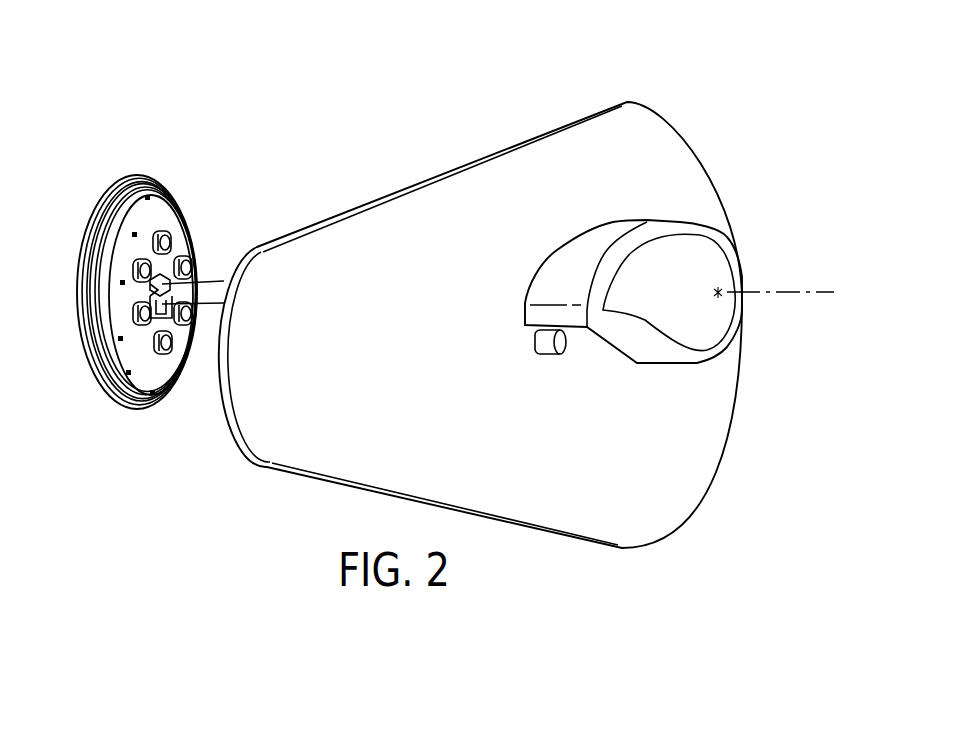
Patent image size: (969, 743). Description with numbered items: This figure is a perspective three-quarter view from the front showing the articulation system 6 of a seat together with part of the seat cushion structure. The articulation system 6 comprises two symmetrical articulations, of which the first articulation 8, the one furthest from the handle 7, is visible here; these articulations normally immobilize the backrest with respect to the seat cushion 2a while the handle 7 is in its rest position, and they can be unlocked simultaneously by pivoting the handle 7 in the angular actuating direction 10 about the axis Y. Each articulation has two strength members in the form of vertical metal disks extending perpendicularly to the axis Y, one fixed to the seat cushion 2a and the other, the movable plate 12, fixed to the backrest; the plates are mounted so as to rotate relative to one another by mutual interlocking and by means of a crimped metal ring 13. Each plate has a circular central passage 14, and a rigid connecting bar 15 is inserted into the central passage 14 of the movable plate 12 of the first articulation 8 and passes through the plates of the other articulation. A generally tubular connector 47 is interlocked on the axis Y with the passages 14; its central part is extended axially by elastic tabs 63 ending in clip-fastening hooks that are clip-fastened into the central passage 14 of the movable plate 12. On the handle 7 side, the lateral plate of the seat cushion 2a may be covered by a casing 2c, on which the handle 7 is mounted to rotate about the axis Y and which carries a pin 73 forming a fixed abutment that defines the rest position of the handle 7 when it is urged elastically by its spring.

The seat cushion 2a is at (660, 559).
The casing 2c is at (693, 467).
The articulation system 6 is at (134, 273).
The handle 7 is at (719, 252).
The first articulation 8 is at (120, 420).
The angular actuating direction 10 is at (513, 228).
The movable plate 12 is at (182, 366).
The crimped metal ring 13 is at (133, 177).
The circular central passage 14 is at (157, 278).
The rigid connecting bar 15 is at (204, 288).
The connector 47 is at (158, 312).
The elastic tabs 63 is at (152, 303).
The pin 73 is at (550, 354).
The axis Y is at (793, 292).